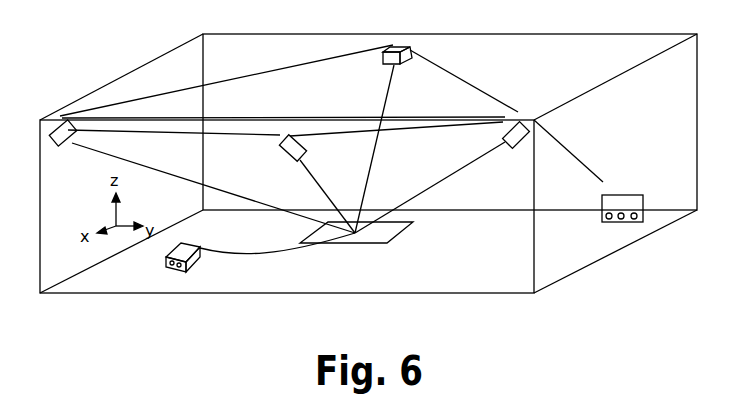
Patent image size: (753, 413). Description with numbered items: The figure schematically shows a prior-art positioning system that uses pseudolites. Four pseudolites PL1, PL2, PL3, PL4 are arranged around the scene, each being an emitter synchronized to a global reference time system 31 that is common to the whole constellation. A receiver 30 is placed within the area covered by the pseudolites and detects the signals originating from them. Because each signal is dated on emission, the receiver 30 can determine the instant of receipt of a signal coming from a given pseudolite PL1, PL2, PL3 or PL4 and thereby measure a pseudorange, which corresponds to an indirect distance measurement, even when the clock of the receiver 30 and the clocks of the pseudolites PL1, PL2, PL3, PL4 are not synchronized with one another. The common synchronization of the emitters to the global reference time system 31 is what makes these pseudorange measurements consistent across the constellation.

The pseudolite PL1 is at (67, 151).
The pseudolite PL2 is at (375, 68).
The pseudolite PL3 is at (508, 152).
The pseudolite PL4 is at (276, 155).
The receiver 30 is at (178, 272).
The global reference time system 31 is at (628, 203).